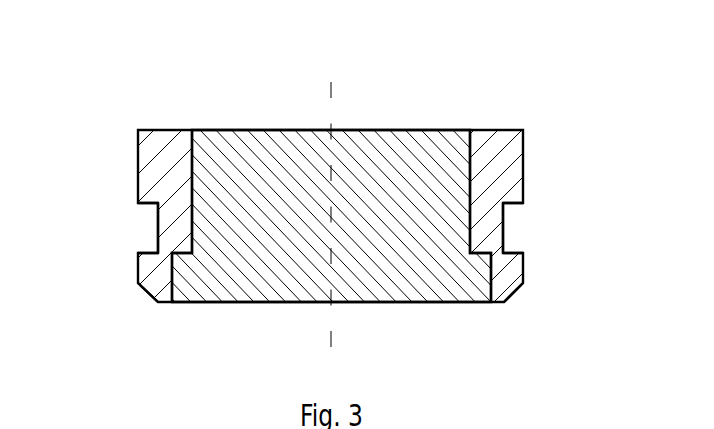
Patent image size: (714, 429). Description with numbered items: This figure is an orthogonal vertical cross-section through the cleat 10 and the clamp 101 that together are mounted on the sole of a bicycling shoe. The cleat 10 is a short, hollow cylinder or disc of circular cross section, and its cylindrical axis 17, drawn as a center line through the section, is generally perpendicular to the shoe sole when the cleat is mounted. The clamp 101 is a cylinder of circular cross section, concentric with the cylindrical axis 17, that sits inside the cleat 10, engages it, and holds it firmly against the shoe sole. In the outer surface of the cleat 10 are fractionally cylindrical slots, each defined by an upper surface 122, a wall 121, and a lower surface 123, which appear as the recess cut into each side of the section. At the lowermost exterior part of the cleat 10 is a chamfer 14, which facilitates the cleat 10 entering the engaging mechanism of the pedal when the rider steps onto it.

The cleat 10 is at (162, 158).
The clamp 101 is at (270, 270).
The cylindrical axis 17 is at (332, 88).
The wall 121 is at (152, 228).
The upper surface 122 is at (148, 202).
The lower surface 123 is at (147, 252).
The chamfer 14 is at (515, 292).